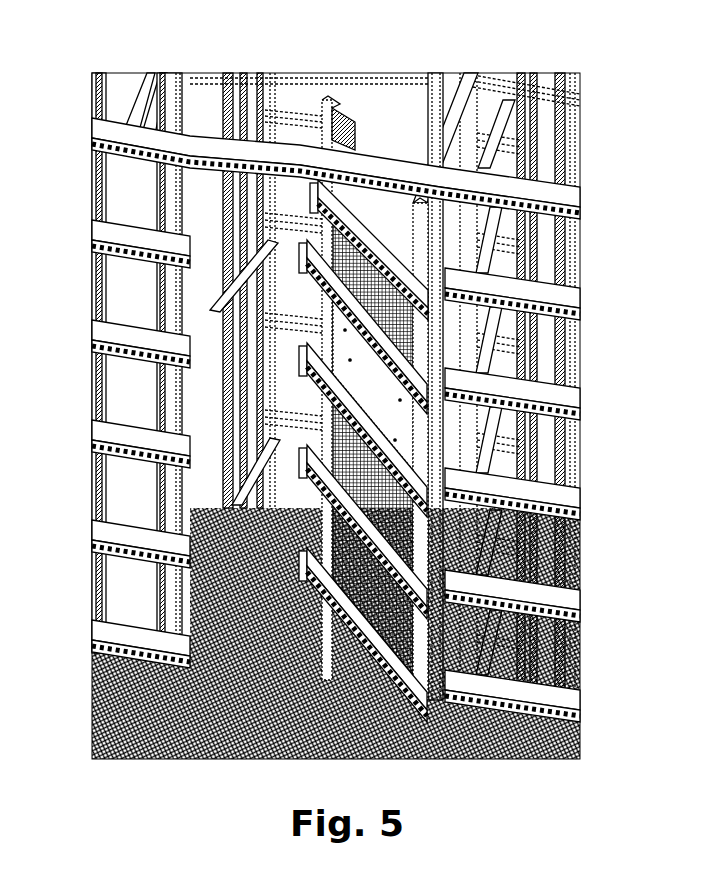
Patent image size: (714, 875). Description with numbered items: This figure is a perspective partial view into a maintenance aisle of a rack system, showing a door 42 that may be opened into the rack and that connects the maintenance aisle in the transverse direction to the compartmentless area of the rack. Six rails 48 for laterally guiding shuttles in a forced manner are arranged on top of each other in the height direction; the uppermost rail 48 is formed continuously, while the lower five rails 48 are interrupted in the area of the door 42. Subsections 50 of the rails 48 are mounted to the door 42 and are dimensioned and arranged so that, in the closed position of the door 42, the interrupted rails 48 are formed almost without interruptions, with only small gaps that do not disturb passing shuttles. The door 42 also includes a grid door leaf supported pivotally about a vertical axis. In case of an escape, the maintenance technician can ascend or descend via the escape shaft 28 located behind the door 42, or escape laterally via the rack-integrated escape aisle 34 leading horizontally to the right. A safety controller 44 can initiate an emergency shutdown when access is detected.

The escape shaft 28 is at (278, 462).
The rack-integrated escape aisle 34 is at (594, 647).
The door 42 is at (356, 128).
The safety controller 44 is at (195, 482).
The rails 48 is at (92, 128).
The subsections 50 is at (317, 183).